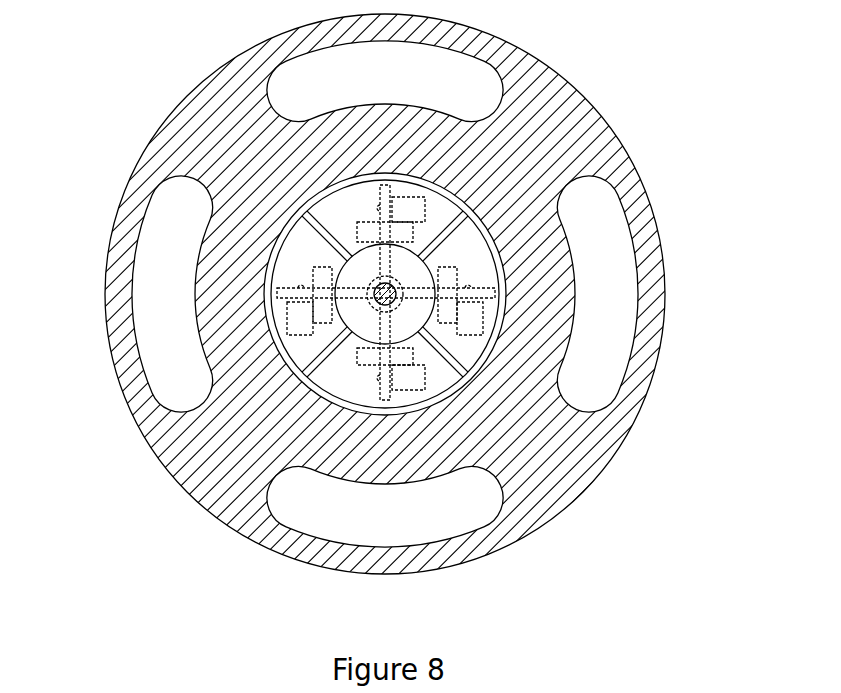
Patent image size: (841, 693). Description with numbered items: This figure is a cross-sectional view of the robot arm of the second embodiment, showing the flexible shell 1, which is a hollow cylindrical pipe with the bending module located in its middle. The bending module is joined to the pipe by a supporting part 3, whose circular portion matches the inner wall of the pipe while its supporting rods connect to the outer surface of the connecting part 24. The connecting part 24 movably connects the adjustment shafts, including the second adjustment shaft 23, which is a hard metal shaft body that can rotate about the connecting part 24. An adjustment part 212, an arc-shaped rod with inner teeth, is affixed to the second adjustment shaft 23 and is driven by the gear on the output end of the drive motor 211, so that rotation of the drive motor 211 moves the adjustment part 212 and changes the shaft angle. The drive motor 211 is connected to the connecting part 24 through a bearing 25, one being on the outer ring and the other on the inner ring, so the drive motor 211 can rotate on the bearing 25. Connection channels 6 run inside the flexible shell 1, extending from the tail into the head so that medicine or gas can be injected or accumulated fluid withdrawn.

The flexible shell 1 is at (548, 68).
The connecting channel 6 is at (646, 273).
The supporting part 3 is at (495, 406).
The connecting part 24 is at (344, 350).
The second adjustment shaft 23 is at (402, 331).
The adjustment part 212 is at (514, 314).
The bearing 25 is at (285, 270).
The drive motor 211 is at (266, 343).